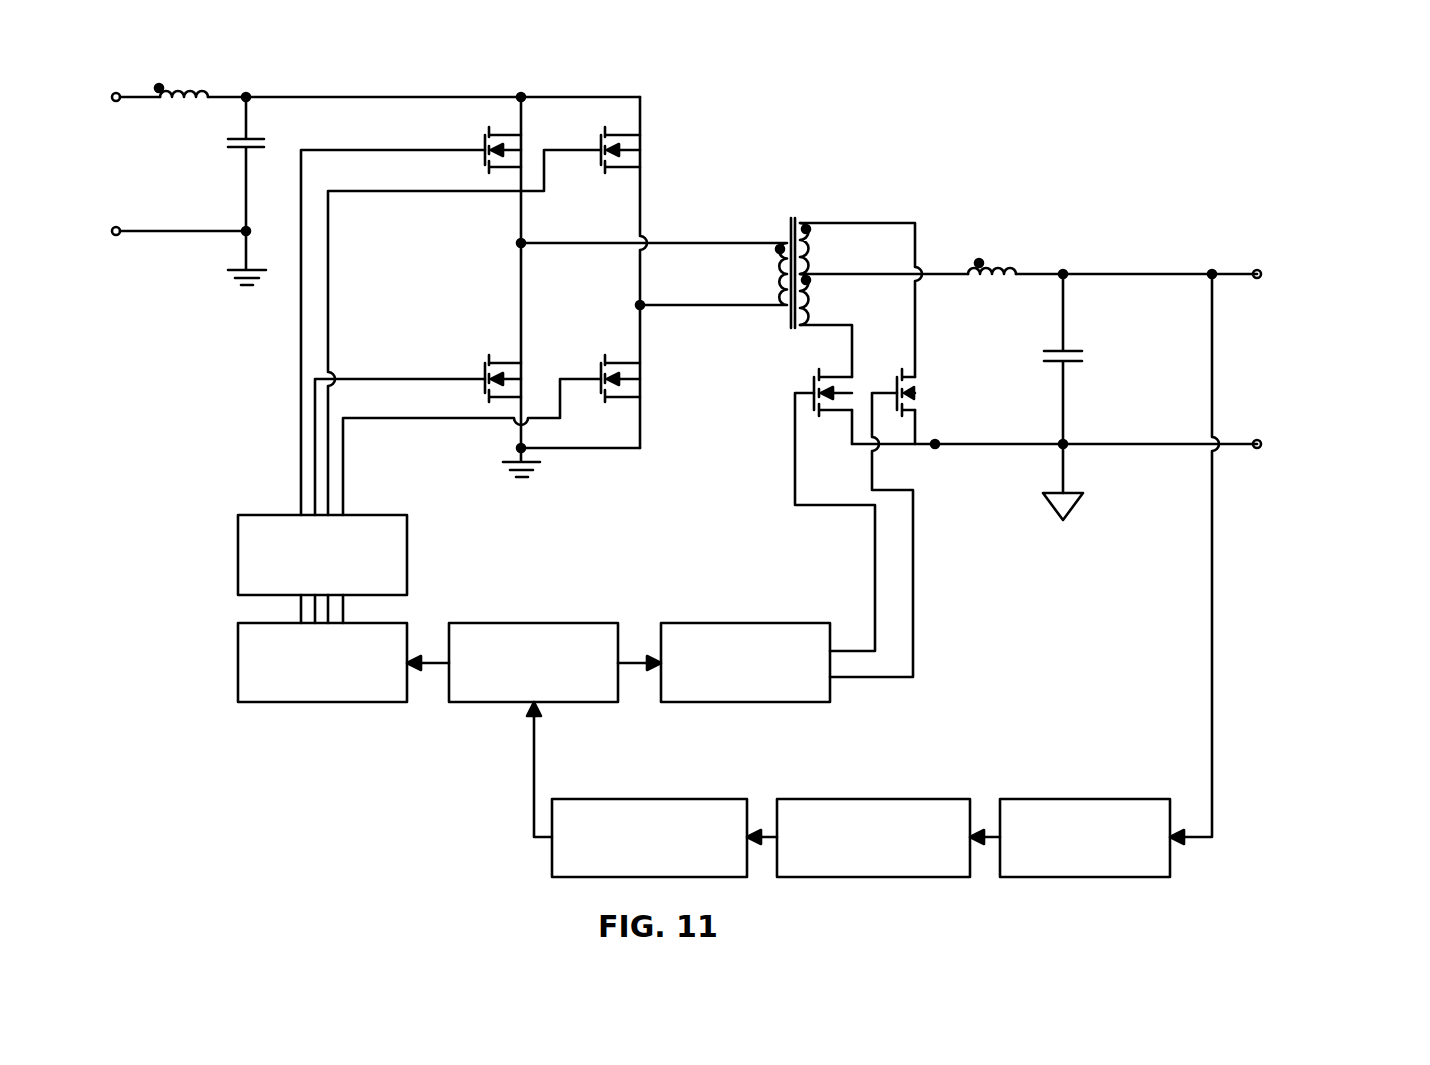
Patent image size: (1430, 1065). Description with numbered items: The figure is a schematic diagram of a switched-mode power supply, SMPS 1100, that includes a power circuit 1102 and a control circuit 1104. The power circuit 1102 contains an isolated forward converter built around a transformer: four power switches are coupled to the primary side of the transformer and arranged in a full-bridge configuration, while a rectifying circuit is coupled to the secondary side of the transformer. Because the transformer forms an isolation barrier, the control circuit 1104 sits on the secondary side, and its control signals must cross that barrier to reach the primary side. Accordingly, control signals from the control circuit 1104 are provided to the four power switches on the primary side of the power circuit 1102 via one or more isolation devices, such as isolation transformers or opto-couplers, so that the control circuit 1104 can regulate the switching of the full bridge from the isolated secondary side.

The SMPS 1100 is at (1320, 64).
The power circuit 1102 is at (711, 164).
The control circuit 1104 is at (957, 664).